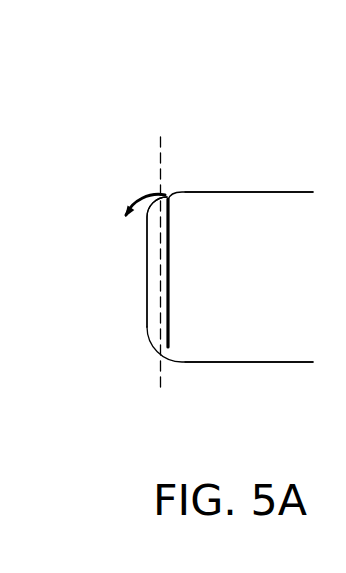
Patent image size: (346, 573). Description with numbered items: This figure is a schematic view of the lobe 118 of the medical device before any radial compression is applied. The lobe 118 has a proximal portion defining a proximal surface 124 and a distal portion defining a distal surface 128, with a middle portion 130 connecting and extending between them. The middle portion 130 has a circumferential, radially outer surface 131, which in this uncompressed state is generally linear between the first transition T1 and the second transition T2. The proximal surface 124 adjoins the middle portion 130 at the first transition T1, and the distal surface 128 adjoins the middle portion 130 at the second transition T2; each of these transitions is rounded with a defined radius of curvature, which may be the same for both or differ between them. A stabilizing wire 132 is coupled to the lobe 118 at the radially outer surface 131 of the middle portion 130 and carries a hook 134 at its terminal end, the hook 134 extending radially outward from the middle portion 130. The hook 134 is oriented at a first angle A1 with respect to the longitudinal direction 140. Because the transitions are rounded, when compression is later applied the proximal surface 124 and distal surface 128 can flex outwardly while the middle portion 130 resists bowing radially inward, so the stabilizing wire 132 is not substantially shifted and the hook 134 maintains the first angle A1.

The lobe 118 is at (201, 101).
The proximal surface 124 is at (270, 363).
The distal surface 128 is at (285, 192).
The middle portion 130 is at (135, 313).
The radially outer surface 131 is at (147, 267).
The stabilizing wire 132 is at (170, 295).
The hook 134 is at (125, 216).
The longitudinal direction 140 is at (163, 150).
The first angle A1 is at (150, 233).
The first transition T1 is at (136, 352).
The second transition T2 is at (179, 183).